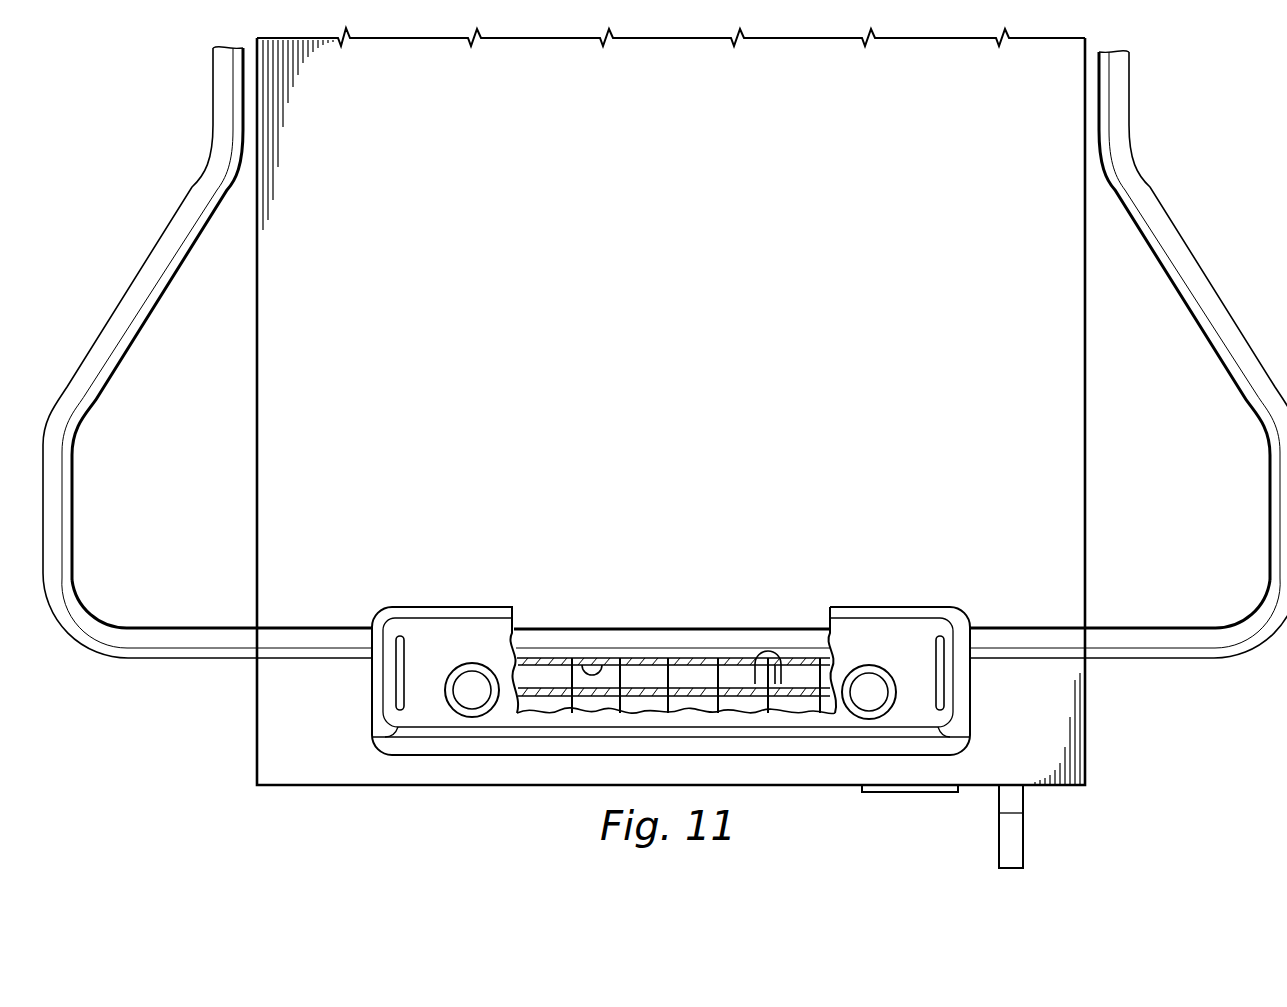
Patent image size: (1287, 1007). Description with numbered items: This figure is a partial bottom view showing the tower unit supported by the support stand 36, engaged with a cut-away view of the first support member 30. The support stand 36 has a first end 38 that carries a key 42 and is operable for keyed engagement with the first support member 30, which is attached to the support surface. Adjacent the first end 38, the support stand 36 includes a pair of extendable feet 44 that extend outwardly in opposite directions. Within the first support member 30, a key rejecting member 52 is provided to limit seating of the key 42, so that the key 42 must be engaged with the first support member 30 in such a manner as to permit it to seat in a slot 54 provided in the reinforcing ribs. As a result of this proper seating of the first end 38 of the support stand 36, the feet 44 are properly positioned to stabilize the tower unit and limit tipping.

The first support member 30 is at (671, 646).
The support stand 36 is at (181, 660).
The first end 38 is at (1162, 660).
The key 42 is at (744, 665).
The extendable feet 44 is at (129, 288).
The key rejecting member 52 is at (598, 668).
The slot 54 is at (720, 585).